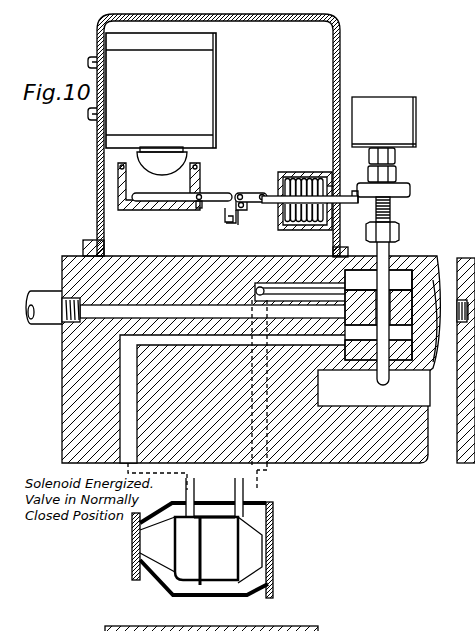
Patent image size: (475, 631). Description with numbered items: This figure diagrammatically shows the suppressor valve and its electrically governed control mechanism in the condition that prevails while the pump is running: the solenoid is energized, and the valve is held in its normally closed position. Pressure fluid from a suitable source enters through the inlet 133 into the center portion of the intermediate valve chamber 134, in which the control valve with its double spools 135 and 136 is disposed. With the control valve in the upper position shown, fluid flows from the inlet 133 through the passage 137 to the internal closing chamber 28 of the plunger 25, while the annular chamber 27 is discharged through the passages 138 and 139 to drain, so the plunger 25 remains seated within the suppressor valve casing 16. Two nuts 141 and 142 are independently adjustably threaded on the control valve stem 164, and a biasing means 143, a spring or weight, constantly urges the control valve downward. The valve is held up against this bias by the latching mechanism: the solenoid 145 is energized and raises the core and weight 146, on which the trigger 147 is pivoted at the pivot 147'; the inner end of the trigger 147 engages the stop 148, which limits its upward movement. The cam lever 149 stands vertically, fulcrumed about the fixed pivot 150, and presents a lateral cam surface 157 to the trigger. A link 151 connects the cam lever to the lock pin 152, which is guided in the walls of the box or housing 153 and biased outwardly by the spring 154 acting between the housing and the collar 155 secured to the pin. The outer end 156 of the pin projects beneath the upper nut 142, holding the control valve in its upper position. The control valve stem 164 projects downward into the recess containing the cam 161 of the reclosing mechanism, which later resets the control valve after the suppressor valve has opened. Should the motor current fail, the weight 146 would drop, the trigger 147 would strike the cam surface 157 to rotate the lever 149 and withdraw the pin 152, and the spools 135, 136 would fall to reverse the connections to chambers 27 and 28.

The solenoid 145 is at (206, 87).
The core and weight 146 is at (185, 158).
The trigger 147 is at (186, 187).
The trigger pivot 147' is at (205, 220).
The stop 148 is at (147, 214).
The lateral cam surface 157 is at (223, 222).
The cam lever 149 is at (232, 225).
The fixed pivot 150 is at (243, 210).
The link 151 is at (265, 186).
The passage 137 is at (262, 285).
The lock pin 152 is at (270, 205).
The box or housing 153 is at (307, 226).
The spring 154 is at (303, 182).
The collar 155 is at (333, 188).
The outer end of pin 156 is at (352, 200).
The upper nut 142 is at (400, 188).
The lower nut 141 is at (397, 231).
The biasing means 143 is at (395, 112).
The upper valve spool 135 is at (402, 283).
The drain passage 139 is at (432, 277).
The intermediate valve chamber 134 is at (402, 312).
The lower valve spool 136 is at (430, 370).
The control valve stem 164 is at (372, 382).
The cam 161 is at (425, 401).
The inlet 133 is at (95, 308).
The passage 138 is at (128, 375).
The annular chamber 27 is at (194, 517).
The plunger 25 is at (199, 540).
The internal closing chamber 28 is at (250, 548).
The suppressor valve casing 16 is at (170, 592).